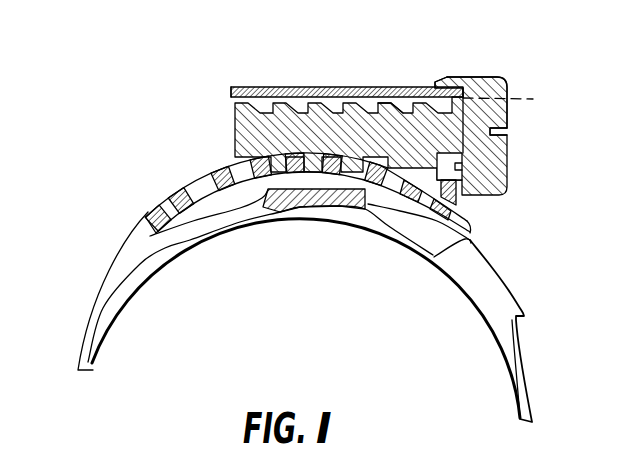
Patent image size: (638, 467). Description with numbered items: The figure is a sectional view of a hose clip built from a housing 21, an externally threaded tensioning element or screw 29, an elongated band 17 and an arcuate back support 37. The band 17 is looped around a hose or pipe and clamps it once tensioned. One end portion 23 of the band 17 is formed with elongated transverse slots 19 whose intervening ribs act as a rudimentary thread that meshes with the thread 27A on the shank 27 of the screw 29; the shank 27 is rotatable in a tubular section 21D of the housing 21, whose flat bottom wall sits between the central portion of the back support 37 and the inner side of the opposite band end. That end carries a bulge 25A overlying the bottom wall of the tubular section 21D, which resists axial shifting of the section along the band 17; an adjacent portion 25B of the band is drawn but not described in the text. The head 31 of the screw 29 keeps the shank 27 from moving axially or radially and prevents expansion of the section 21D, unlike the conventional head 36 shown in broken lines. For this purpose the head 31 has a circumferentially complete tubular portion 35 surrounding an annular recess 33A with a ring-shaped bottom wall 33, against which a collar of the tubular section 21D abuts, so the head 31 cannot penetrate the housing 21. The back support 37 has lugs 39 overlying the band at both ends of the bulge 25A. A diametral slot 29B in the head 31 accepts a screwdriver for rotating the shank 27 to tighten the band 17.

The band 17 is at (88, 299).
The slots 19 is at (165, 212).
The housing 21 is at (296, 86).
The tubular section 21D is at (240, 86).
The end portion 23 is at (473, 226).
The bulge 25A is at (290, 182).
The liner bridge section 25B is at (348, 202).
The shank 27 is at (262, 123).
The thread 27A is at (352, 100).
The screw 29 is at (520, 77).
The diametral slot 29B is at (500, 134).
The head 31 is at (475, 73).
The bottom wall 33 is at (462, 164).
The annular recess 33A is at (478, 197).
The tubular portion 35 is at (440, 80).
The head 36 is at (513, 99).
The back support 37 is at (317, 223).
The lugs 39 is at (502, 293).